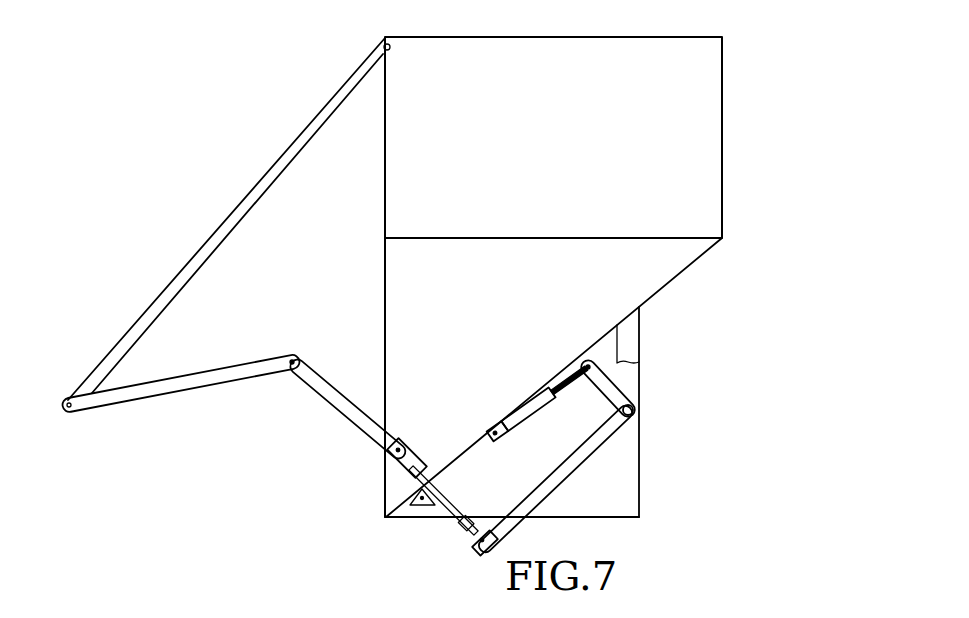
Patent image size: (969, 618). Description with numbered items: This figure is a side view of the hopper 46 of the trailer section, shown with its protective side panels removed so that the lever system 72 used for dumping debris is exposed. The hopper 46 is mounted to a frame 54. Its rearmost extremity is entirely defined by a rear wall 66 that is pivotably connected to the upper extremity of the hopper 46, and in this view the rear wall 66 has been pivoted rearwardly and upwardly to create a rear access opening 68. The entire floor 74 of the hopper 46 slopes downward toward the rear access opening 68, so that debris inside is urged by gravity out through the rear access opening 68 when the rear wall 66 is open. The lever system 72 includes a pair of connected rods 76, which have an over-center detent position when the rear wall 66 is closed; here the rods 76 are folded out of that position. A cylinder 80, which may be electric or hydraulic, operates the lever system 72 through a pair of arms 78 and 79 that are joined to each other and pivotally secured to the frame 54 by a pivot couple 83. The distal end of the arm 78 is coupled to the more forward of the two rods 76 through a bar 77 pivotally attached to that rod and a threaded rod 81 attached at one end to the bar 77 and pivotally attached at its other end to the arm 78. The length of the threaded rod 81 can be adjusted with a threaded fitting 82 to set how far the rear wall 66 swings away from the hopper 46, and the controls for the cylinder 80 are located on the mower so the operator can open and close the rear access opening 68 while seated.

The hopper 46 is at (712, 110).
The frame 54 is at (631, 343).
The rear wall 66 is at (293, 147).
The rear access opening 68 is at (336, 284).
The lever system 72 is at (693, 471).
The floor 74 is at (657, 292).
The connected rods 76 is at (308, 383).
The bar 77 is at (413, 457).
The arm 78 is at (552, 483).
The arm 79 is at (608, 390).
The cylinder 80 is at (530, 403).
The threaded rod 81 is at (448, 497).
The threaded fitting 82 is at (470, 537).
The pivot couple 83 is at (640, 407).